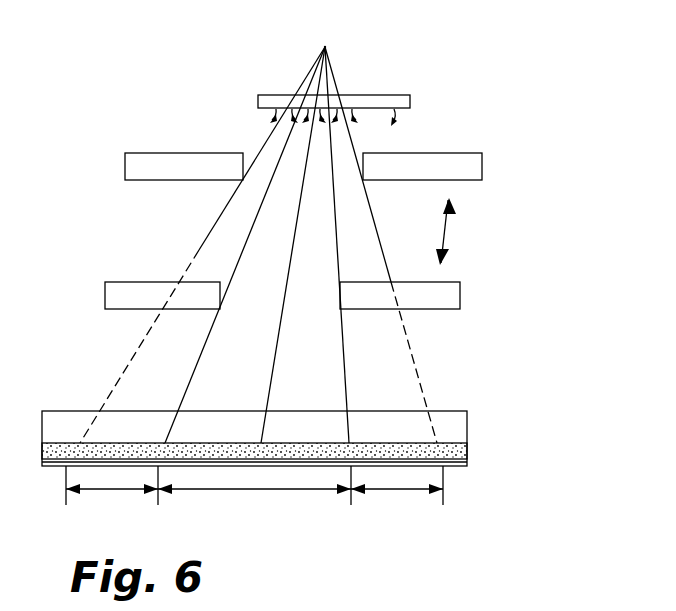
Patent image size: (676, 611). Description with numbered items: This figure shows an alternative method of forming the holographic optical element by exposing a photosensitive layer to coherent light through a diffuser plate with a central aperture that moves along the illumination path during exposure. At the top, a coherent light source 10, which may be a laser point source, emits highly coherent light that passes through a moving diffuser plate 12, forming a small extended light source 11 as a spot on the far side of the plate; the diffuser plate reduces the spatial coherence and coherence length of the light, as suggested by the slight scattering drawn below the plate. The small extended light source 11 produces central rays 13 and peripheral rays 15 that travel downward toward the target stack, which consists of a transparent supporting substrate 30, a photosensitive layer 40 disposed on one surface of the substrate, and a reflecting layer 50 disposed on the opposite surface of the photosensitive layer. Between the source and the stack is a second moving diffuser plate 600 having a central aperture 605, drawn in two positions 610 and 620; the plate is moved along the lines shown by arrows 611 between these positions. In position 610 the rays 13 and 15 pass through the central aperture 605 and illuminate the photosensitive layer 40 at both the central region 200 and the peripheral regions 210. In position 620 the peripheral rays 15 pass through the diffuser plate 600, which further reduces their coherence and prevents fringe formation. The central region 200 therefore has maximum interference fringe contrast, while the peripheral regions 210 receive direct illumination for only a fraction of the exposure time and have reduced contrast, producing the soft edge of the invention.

The coherent light source 10 is at (332, 40).
The small extended light source 11 is at (300, 128).
The moving diffuser plate 12 is at (270, 95).
The central rays 13 is at (243, 253).
The peripheral rays 15 is at (207, 243).
The moving diffuser plate 600 is at (482, 153).
The central aperture 605 is at (288, 188).
The position 610 is at (125, 170).
The arrows 611 is at (446, 232).
The position 620 is at (105, 300).
The transparent supporting substrate 30 is at (467, 425).
The photosensitive layer 40 is at (467, 452).
The reflecting layer 50 is at (467, 462).
The central region 200 is at (284, 490).
The peripheral regions 210 is at (114, 490).